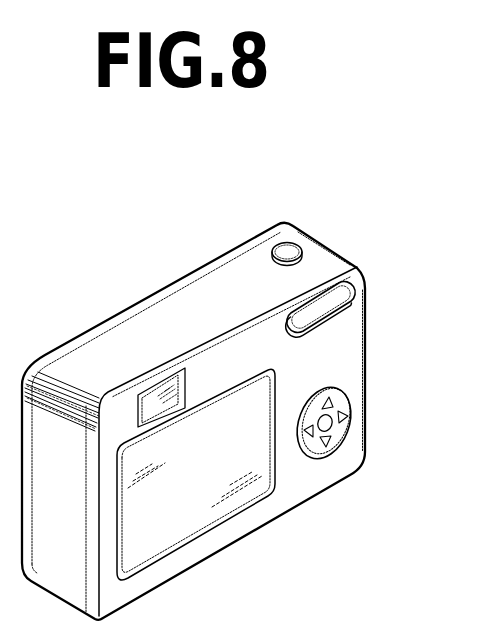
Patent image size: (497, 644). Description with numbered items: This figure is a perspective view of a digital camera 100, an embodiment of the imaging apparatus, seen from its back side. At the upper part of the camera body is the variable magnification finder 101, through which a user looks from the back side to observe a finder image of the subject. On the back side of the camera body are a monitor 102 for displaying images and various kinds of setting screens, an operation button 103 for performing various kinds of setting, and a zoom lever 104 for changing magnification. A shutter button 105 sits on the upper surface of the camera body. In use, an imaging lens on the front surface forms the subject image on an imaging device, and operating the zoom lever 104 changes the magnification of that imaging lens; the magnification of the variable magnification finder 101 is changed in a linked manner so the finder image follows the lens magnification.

The digital camera 100 is at (92, 220).
The variable magnification finder 101 is at (152, 398).
The monitor 102 is at (232, 505).
The operation button 103 is at (343, 426).
The zoom lever 104 is at (353, 300).
The shutter button 105 is at (286, 250).